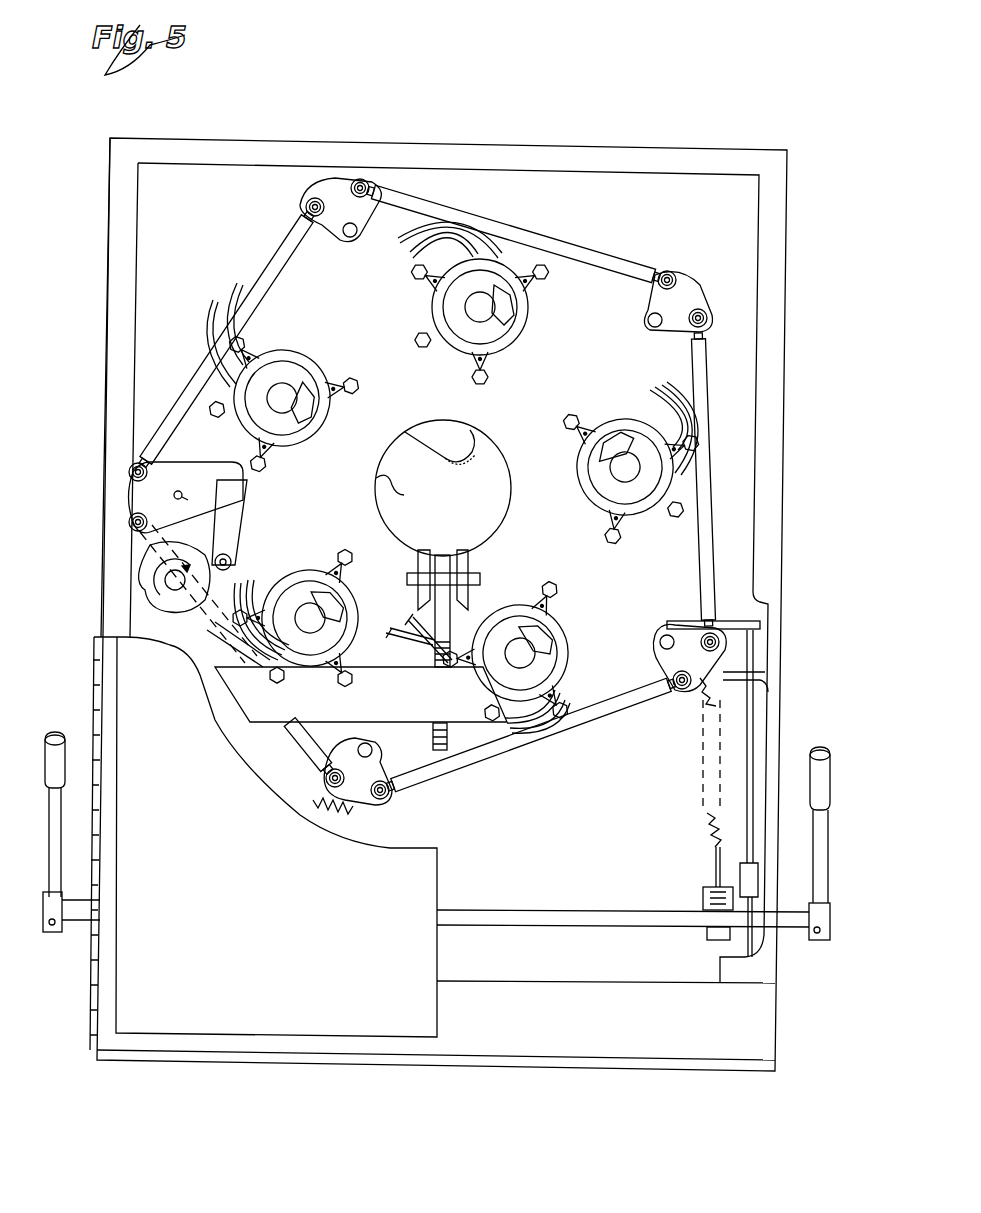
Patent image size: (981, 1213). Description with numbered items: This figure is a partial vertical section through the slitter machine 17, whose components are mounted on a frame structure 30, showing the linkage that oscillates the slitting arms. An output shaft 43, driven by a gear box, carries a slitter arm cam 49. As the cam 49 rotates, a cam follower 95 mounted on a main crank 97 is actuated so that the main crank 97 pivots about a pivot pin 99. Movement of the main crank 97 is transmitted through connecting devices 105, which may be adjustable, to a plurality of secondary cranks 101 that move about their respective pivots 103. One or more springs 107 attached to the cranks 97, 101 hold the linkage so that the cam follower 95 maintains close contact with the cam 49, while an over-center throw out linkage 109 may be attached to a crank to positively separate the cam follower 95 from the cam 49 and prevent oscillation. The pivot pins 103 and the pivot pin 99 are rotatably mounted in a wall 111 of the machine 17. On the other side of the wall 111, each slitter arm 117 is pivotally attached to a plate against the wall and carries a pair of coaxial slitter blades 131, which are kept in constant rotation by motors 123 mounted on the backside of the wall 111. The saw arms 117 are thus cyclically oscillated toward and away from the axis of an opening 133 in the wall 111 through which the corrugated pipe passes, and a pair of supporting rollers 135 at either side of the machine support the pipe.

The slitter machine 17 is at (306, 132).
The frame structure 30 is at (350, 703).
The output shaft 43 is at (165, 582).
The slitter arm cam 49 is at (200, 548).
The cam follower 95 is at (236, 558).
The main crank 97 is at (218, 472).
The pivot pin 99 is at (193, 497).
The secondary cranks 101 is at (330, 193).
The pivots 103 is at (352, 237).
The connecting devices 105 is at (505, 228).
The springs 107 is at (325, 810).
The over-center throw out linkage 109 is at (688, 888).
The wall 111 is at (410, 398).
The slitter arm 117 is at (448, 425).
The motor 123 is at (292, 378).
The slitter blades 131 is at (455, 458).
The opening 133 is at (405, 492).
The supporting rollers 135 is at (465, 572).